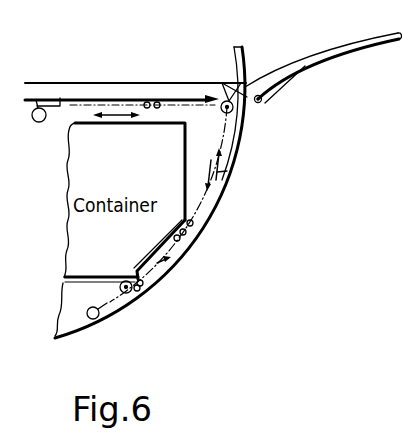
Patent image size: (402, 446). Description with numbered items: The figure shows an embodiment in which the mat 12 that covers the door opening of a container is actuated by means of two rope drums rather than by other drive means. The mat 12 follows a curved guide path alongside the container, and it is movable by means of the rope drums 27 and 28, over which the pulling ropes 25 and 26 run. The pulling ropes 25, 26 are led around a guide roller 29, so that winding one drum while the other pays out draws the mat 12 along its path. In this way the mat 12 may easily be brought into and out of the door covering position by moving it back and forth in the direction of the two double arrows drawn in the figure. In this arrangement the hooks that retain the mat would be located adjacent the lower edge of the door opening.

The mat 12 is at (244, 173).
The pulling rope 25 is at (197, 276).
The pulling rope 26 is at (57, 93).
The rope drum 27 is at (101, 320).
The rope drum 28 is at (36, 93).
The guide roller 29 is at (187, 78).